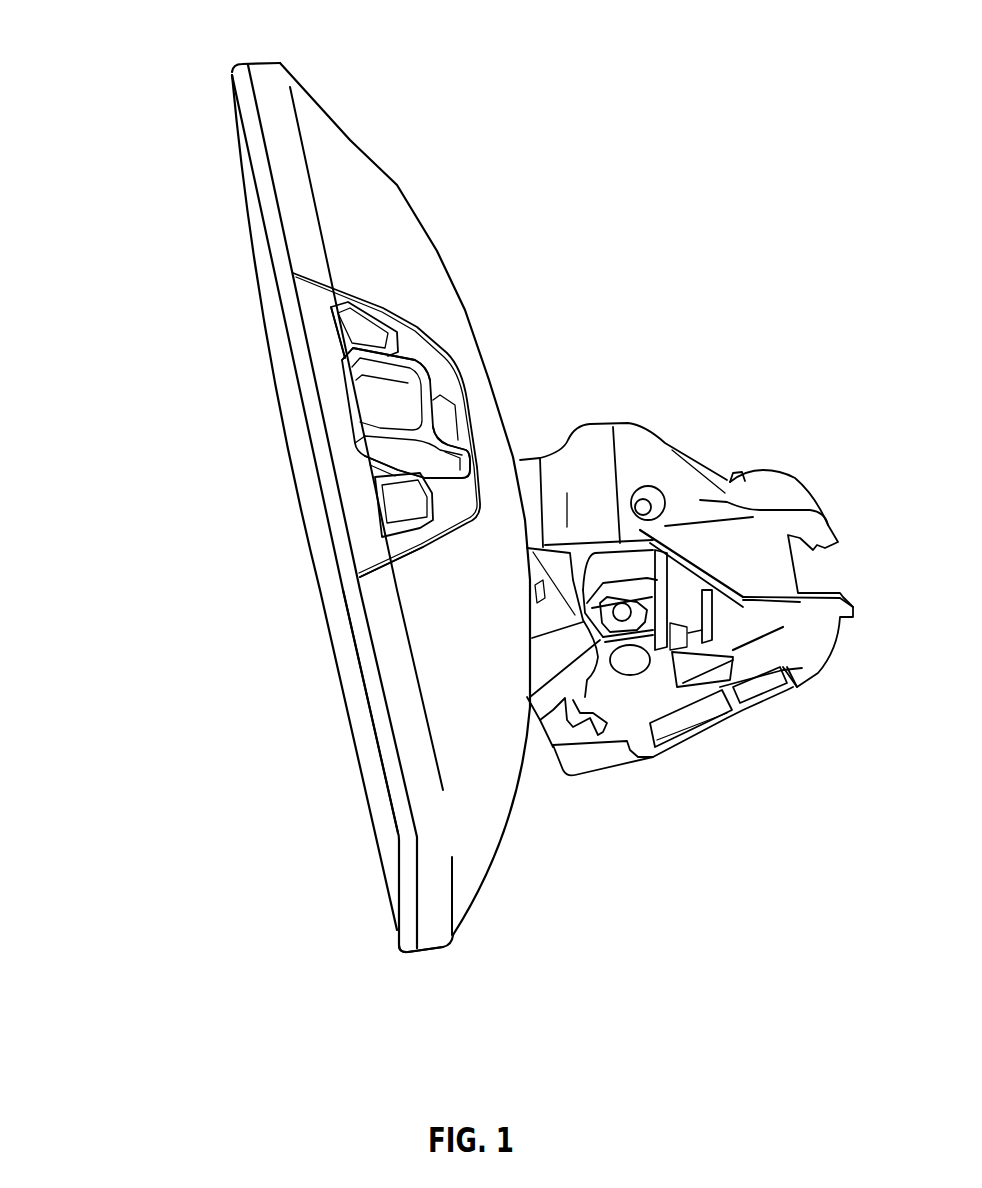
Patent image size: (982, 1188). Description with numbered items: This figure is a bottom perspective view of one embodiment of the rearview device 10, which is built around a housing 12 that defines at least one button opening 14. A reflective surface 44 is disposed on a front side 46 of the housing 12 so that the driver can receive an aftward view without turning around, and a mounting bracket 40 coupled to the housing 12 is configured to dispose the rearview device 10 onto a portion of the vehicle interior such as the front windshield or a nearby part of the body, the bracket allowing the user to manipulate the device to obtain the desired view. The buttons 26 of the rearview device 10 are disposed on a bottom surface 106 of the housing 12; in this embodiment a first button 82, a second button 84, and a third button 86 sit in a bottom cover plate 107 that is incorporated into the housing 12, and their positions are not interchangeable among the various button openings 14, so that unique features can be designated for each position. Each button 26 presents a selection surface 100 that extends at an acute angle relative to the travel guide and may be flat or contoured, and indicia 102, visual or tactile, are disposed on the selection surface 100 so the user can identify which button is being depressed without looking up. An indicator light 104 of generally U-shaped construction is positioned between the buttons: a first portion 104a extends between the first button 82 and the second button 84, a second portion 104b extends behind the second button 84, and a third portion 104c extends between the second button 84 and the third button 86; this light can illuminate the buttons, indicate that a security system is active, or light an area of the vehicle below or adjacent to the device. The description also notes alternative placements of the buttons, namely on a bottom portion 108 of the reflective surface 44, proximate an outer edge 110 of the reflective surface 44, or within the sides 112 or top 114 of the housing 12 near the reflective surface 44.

The rearview device 10 is at (170, 58).
The housing 12 is at (330, 143).
The reflective surface 44 is at (260, 240).
The button 26 is at (302, 289).
The third button 86 is at (338, 328).
The third portion 104c is at (350, 362).
The second button 84 is at (357, 398).
The selection surface 100 is at (407, 410).
The indicator light 104 is at (430, 362).
The indicia 102 is at (367, 323).
The second portion 104b is at (457, 427).
The button opening 14 is at (363, 430).
The first portion 104a is at (377, 463).
The first button 82 is at (377, 508).
The bottom cover plate 107 is at (373, 555).
The bottom surface 106 is at (475, 653).
The bottom portion 108 is at (350, 657).
The front side 46 is at (378, 778).
The outer edge 110 is at (393, 924).
The sides 112 is at (440, 903).
The top 114 is at (417, 952).
The mounting bracket 40 is at (757, 497).